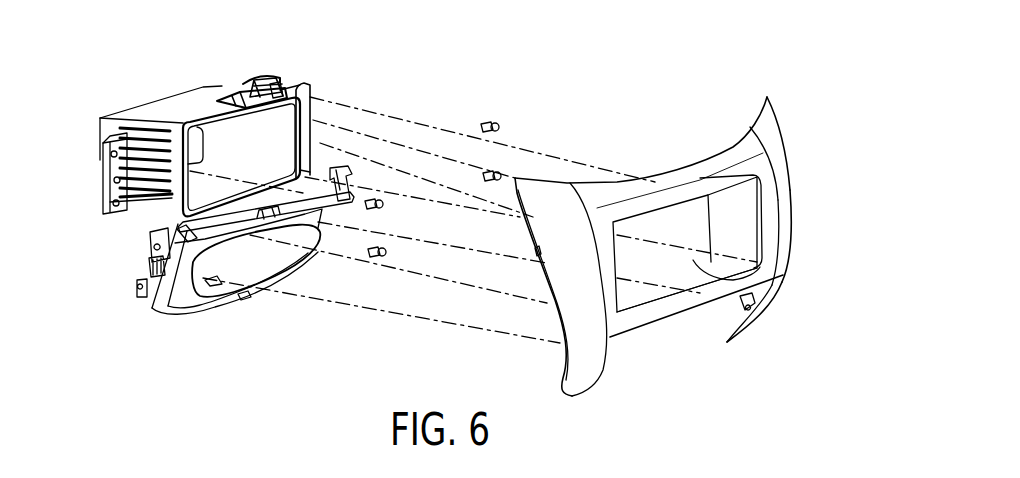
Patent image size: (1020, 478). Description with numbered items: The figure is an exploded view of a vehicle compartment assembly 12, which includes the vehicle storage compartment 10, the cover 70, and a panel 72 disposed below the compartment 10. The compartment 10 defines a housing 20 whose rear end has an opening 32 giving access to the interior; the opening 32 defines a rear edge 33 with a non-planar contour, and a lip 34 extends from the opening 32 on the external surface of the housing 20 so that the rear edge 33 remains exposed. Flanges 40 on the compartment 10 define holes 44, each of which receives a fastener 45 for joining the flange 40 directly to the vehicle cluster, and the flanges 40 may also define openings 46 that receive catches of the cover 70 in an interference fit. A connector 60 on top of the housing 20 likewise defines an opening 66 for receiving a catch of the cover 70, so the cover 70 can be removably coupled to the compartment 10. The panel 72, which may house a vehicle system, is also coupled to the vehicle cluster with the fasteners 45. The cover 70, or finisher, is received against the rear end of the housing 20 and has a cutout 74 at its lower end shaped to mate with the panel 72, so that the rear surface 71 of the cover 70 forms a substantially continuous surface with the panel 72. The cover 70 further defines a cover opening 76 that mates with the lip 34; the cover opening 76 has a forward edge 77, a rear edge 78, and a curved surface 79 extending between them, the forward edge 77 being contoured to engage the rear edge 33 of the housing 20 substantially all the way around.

The vehicle storage compartment 10 is at (203, 87).
The compartment assembly 12 is at (498, 72).
The housing 20 is at (163, 113).
The opening 32 is at (308, 122).
The rear edge 33 is at (320, 170).
The lip 34 is at (320, 196).
The flange 40 is at (308, 84).
The hole 44 is at (104, 146).
The fastener 45 is at (499, 127).
The opening 46 is at (108, 185).
The connector 60 is at (248, 80).
The opening 66 is at (278, 94).
The cover 70 is at (784, 122).
The rear surface 71 is at (780, 154).
The panel 72 is at (167, 318).
The cutout 74 is at (727, 343).
The cover opening 76 is at (701, 228).
The forward edge 77 is at (720, 279).
The rear edge 78 is at (770, 194).
The surface 79 is at (743, 230).